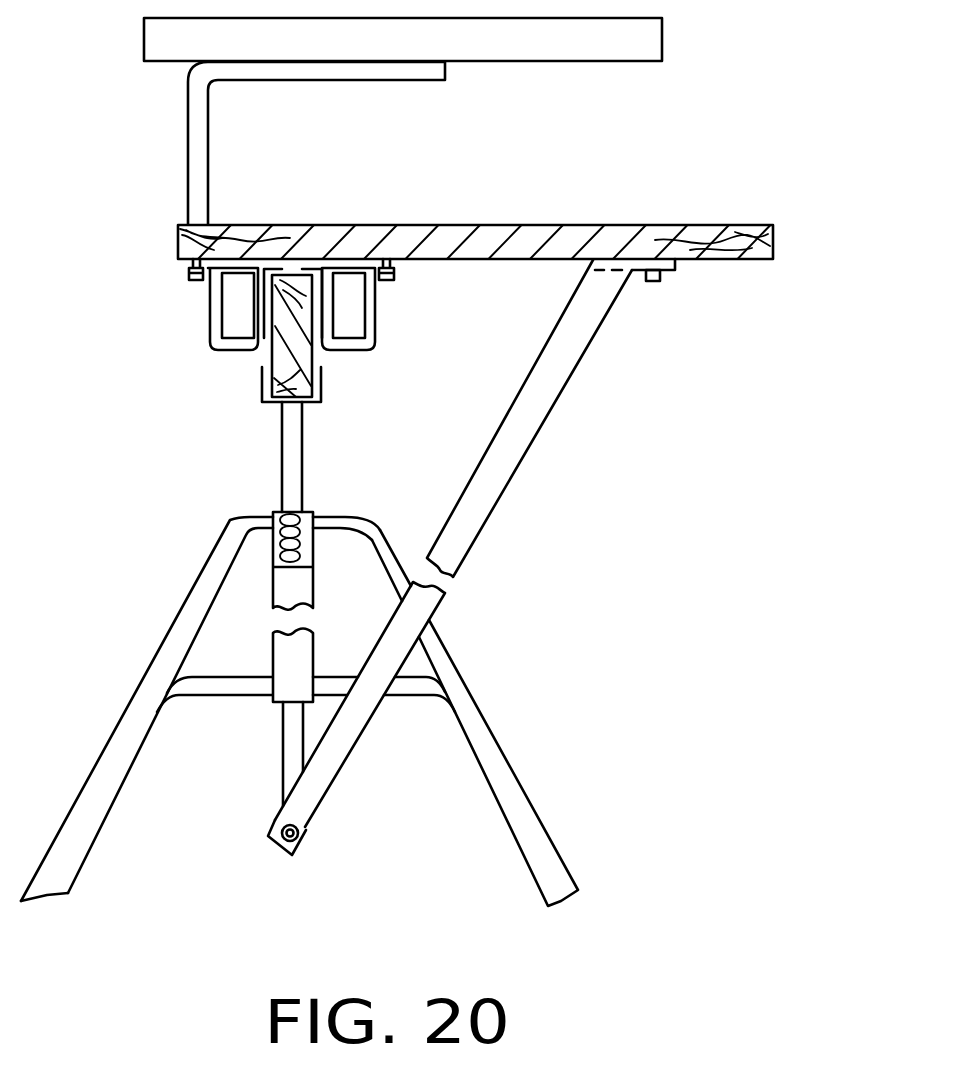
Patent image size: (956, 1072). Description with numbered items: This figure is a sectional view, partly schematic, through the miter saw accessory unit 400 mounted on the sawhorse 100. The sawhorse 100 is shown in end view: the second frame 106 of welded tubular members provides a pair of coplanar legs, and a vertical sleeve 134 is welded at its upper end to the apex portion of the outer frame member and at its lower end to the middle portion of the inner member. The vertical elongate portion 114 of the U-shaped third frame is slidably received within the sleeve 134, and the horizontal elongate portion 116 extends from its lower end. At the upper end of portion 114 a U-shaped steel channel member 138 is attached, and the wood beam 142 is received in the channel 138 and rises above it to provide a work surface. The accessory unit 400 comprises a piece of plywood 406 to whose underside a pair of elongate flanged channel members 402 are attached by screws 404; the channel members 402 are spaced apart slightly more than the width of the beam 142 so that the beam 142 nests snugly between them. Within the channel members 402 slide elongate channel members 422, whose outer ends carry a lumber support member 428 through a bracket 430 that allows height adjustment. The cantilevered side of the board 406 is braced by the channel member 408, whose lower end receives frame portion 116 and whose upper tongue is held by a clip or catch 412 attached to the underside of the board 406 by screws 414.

The sawhorse 100 is at (184, 548).
The second frame 106 is at (486, 720).
The vertical elongate portion 114 is at (302, 479).
The horizontal elongate portion 116 is at (283, 846).
The vertical sleeve 134 is at (273, 590).
The elongate channel member 138 is at (266, 408).
The wood beam 142 is at (313, 390).
The miter saw accessory unit 400 is at (672, 186).
The elongate flanged channel member 402 is at (210, 333).
The screws 404 is at (190, 283).
The piece of plywood 406 is at (773, 244).
The channel member 408 is at (522, 455).
The clip or catch 412 is at (676, 265).
The screws 414 is at (656, 284).
The elongate channel member 422 is at (232, 340).
The lumber support member 428 is at (578, 40).
The bracket 430 is at (222, 84).